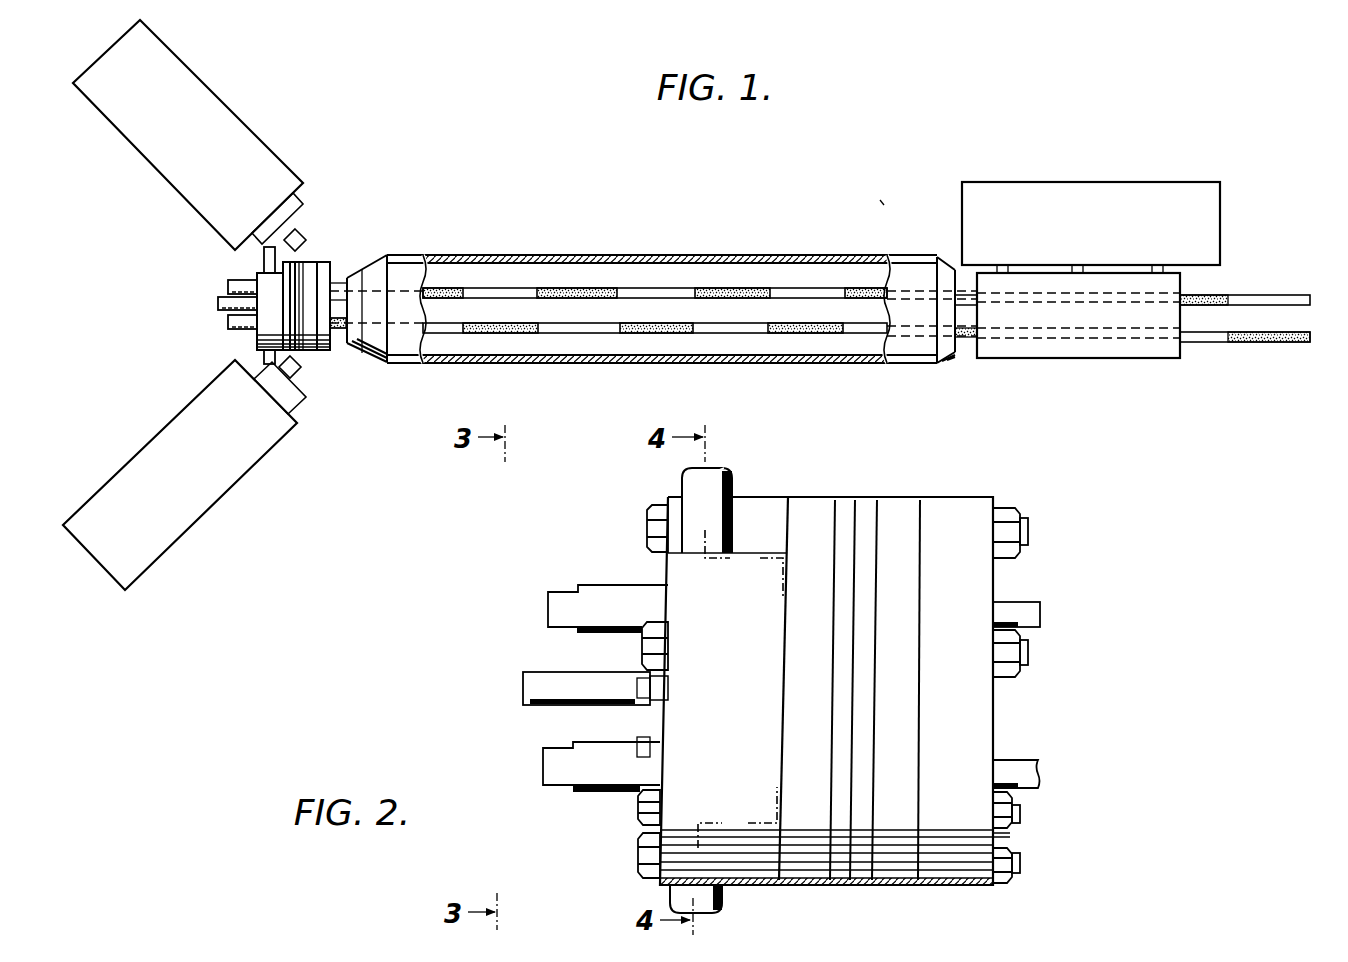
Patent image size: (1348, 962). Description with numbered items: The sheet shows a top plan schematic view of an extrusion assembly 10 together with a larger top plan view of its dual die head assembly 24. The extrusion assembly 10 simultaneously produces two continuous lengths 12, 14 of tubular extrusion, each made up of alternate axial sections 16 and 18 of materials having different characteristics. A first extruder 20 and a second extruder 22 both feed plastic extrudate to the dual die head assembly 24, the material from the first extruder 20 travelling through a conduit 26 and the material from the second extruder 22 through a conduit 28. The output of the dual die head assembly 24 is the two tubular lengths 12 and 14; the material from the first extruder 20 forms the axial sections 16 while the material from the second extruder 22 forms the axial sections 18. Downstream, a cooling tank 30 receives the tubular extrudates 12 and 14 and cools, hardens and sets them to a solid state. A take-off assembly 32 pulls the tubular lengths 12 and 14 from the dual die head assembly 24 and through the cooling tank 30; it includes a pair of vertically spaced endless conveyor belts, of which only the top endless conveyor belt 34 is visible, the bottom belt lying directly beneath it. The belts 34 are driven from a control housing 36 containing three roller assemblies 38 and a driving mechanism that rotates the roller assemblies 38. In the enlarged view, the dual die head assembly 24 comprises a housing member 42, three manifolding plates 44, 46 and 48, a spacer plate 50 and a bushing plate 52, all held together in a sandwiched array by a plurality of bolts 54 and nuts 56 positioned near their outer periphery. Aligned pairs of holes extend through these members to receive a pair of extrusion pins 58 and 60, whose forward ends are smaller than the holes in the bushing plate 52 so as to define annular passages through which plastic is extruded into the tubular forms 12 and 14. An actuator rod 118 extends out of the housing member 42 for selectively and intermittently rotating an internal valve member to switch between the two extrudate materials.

In FIG. 1, the extrusion assembly 10 is at (878, 212).
In FIG. 1, the tubular extrusion length 12 is at (1290, 293).
In FIG. 2, the tubular extrusion length 12 is at (1040, 600).
In FIG. 1, the tubular extrusion length 14 is at (1290, 345).
In FIG. 2, the tubular extrusion length 14 is at (1037, 760).
In FIG. 1, the axial sections 16 is at (648, 289).
In FIG. 1, the axial sections 18 is at (565, 289).
In FIG. 1, the first extruder 20 is at (253, 143).
In FIG. 1, the second extruder 22 is at (217, 487).
In FIG. 1, the dual die head assembly 24 is at (333, 247).
In FIG. 2, the dual die head assembly 24 is at (1045, 558).
In FIG. 1, the conduit 26 is at (263, 252).
In FIG. 2, the conduit 26 is at (738, 482).
In FIG. 1, the conduit 28 is at (264, 357).
In FIG. 2, the conduit 28 is at (725, 897).
In FIG. 1, the cooling tank 30 is at (468, 256).
In FIG. 1, the take-off assembly 32 is at (1130, 152).
In FIG. 1, the top endless conveyor belt 34 is at (1106, 352).
In FIG. 1, the control housing 36 is at (1200, 190).
In FIG. 1, the roller assemblies 38 is at (1003, 265).
In FIG. 2, the housing member 42 is at (778, 500).
In FIG. 2, the manifolding plate 44 is at (828, 500).
In FIG. 2, the manifolding plate 46 is at (848, 500).
In FIG. 2, the manifolding plate 48 is at (870, 500).
In FIG. 2, the spacer plate 50 is at (908, 500).
In FIG. 2, the bushing plate 52 is at (958, 500).
In FIG. 2, the bolts 54 is at (648, 525).
In FIG. 2, the nuts 56 is at (1010, 512).
In FIG. 2, the extrusion pin 58 is at (614, 583).
In FIG. 2, the extrusion pin 60 is at (590, 773).
In FIG. 1, the actuator rod 118 is at (224, 304).
In FIG. 2, the actuator rod 118 is at (530, 672).